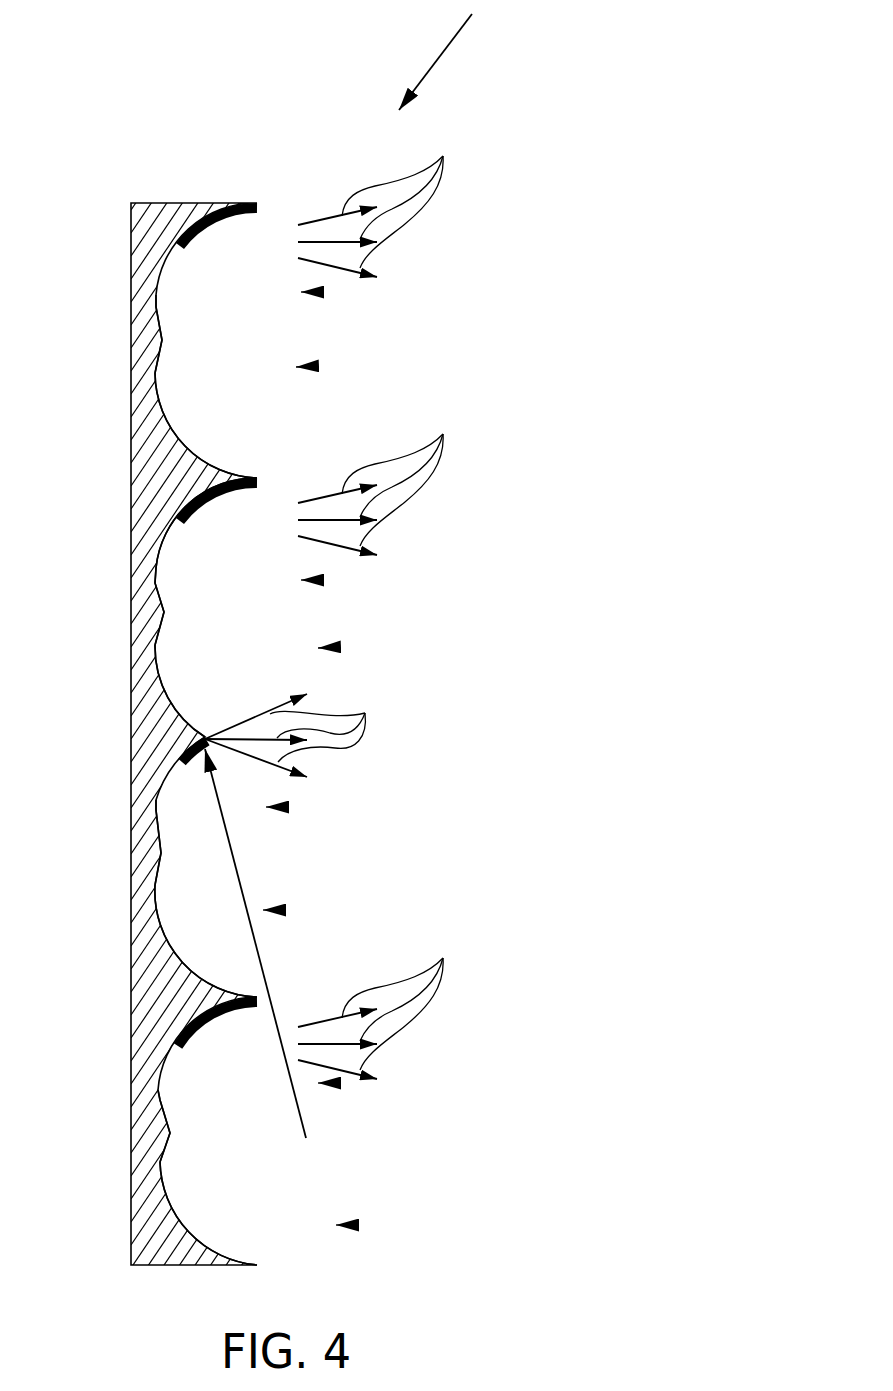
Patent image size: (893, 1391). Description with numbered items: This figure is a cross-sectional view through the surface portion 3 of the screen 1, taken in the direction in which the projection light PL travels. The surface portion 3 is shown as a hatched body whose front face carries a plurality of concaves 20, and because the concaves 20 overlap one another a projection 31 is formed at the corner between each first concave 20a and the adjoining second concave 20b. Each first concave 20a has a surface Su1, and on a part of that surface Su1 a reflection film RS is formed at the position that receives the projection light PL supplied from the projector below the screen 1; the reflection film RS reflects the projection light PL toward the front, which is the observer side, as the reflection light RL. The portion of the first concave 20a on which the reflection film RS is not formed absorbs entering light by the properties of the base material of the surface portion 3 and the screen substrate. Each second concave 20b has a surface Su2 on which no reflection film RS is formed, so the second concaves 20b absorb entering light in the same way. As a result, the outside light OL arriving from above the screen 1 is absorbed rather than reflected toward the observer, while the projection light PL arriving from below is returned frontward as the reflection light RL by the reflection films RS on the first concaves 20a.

The screen 1 is at (234, 153).
The surface portion 3 is at (178, 205).
The projection 31 is at (258, 478).
The concaves 20 is at (377, 775).
The first concave 20a is at (320, 292).
The second concave 20b is at (316, 365).
The reflection film RS is at (192, 233).
The surface of first concave Su1 is at (156, 307).
The surface of second concave Su2 is at (158, 402).
The reflection light RL is at (332, 604).
The outside light OL is at (445, 50).
The projection light PL is at (298, 1098).